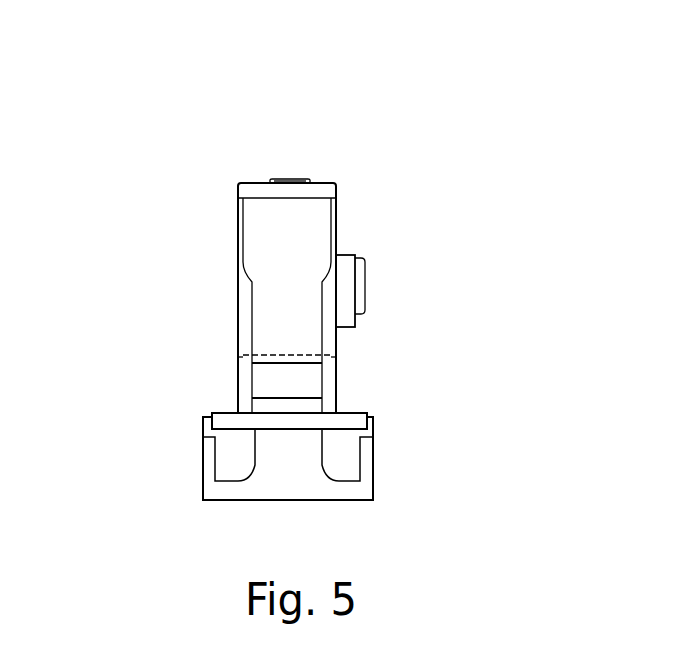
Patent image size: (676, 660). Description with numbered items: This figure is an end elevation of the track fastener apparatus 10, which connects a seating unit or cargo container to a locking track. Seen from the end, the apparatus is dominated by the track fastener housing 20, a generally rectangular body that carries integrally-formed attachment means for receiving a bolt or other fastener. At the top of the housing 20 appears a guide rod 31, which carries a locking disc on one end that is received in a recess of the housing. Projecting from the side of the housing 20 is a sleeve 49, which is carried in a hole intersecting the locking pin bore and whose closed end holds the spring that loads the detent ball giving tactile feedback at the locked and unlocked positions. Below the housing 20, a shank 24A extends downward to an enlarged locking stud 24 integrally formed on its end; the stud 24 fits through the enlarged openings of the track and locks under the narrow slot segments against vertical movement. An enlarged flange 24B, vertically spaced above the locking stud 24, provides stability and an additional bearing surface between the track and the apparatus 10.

The track fastener apparatus 10 is at (510, 188).
The track fastener housing 20 is at (285, 240).
The guide rod 31 is at (282, 181).
The sleeve 49 is at (365, 288).
The locking stud 24 is at (257, 495).
The shank 24A is at (247, 463).
The enlarged flange 24B is at (232, 416).